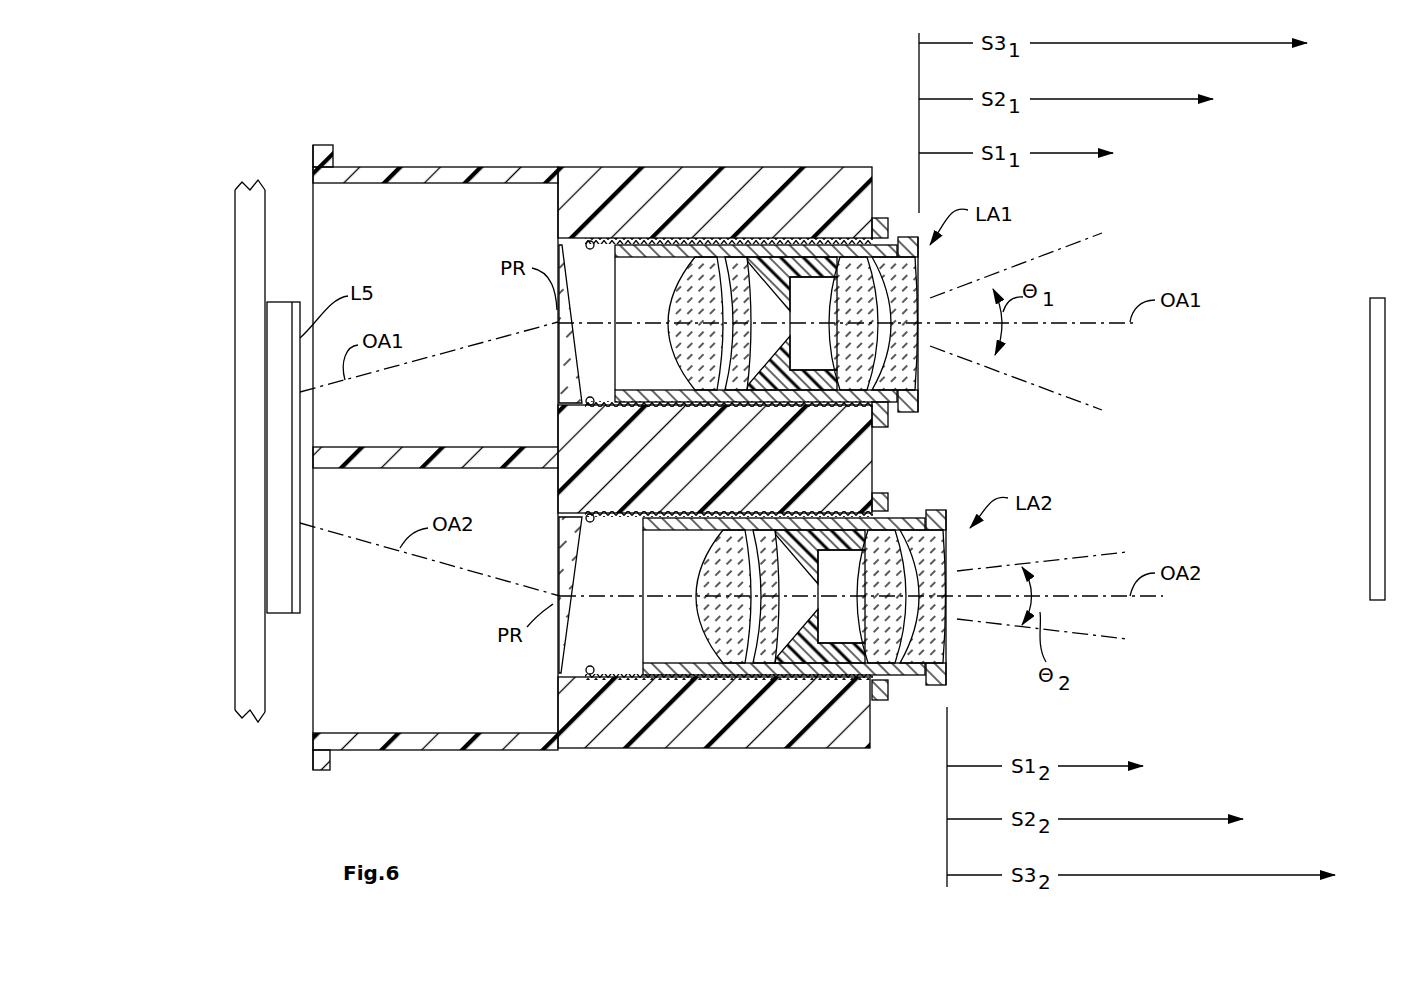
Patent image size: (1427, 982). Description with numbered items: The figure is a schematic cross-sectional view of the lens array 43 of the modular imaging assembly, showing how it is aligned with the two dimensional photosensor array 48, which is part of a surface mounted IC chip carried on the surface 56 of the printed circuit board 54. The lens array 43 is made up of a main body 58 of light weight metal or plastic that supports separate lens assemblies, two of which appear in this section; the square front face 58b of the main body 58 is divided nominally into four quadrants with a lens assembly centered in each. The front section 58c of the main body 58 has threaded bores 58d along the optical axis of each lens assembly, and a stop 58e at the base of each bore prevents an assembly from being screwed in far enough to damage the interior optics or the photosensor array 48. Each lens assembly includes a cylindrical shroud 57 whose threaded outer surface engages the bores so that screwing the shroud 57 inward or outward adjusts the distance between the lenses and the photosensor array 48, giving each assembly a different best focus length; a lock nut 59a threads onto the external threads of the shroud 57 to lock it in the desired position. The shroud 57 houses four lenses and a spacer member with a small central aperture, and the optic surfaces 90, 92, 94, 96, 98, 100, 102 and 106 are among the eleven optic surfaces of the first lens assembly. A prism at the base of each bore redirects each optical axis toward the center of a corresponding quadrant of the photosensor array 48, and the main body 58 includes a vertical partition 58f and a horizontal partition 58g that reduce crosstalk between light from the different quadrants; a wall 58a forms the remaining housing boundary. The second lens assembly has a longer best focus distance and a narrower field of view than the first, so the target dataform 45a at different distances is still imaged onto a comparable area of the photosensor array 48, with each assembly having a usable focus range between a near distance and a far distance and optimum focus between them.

The lens array 43 is at (638, 112).
The target dataform 45a is at (1385, 306).
The two dimensional photosensor array 48 is at (283, 302).
The printed circuit board 54 is at (233, 612).
The surface 56 is at (265, 683).
The cylindrical shroud 57 is at (665, 246).
The main body 58 is at (675, 750).
The housing bottom wall 58a is at (322, 768).
The front face 58b is at (873, 463).
The front section 58c is at (785, 166).
The threaded bores 58d is at (640, 242).
The stop 58e is at (590, 673).
The vertical partition 58f is at (400, 205).
The horizontal partition 58g is at (400, 458).
The lock nut 59a is at (877, 430).
The optic surface 90 is at (913, 285).
The optic surface 92 is at (910, 372).
The optic surface 94 is at (865, 395).
The optic surface 96 is at (817, 392).
The optic surface 98 is at (803, 395).
The optic surface 100 is at (726, 392).
The optic surface 102 is at (697, 380).
The optic surface 106 is at (668, 350).